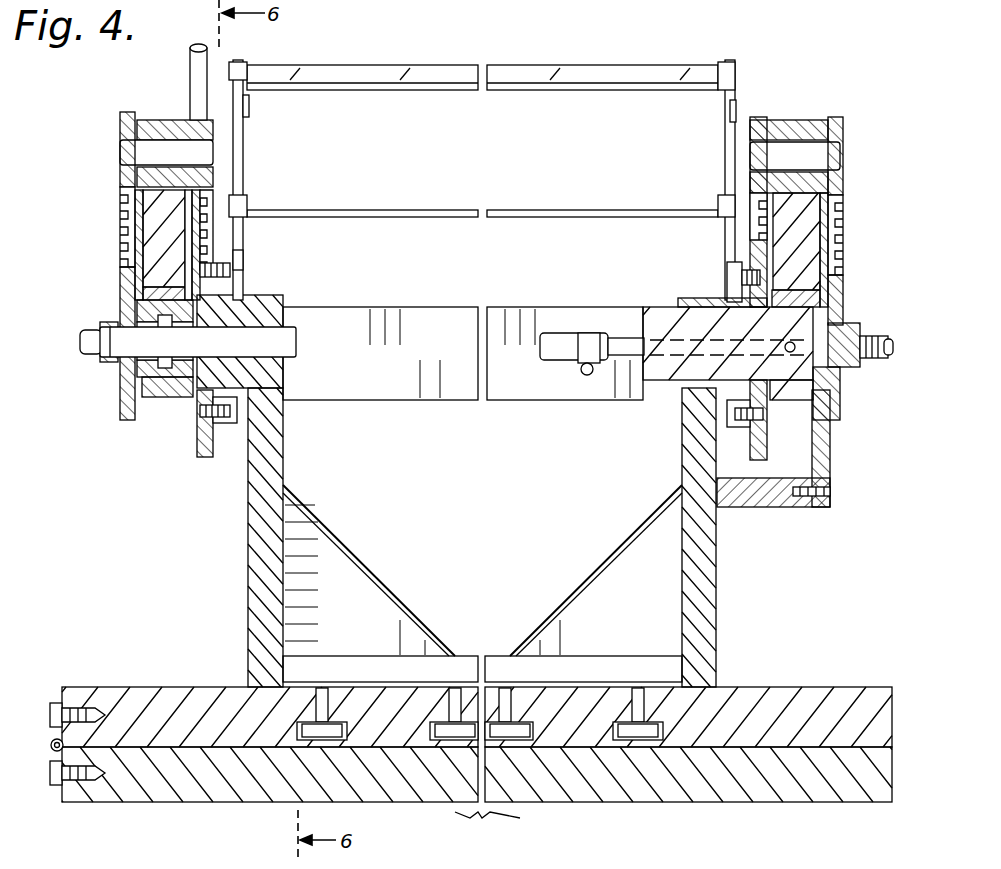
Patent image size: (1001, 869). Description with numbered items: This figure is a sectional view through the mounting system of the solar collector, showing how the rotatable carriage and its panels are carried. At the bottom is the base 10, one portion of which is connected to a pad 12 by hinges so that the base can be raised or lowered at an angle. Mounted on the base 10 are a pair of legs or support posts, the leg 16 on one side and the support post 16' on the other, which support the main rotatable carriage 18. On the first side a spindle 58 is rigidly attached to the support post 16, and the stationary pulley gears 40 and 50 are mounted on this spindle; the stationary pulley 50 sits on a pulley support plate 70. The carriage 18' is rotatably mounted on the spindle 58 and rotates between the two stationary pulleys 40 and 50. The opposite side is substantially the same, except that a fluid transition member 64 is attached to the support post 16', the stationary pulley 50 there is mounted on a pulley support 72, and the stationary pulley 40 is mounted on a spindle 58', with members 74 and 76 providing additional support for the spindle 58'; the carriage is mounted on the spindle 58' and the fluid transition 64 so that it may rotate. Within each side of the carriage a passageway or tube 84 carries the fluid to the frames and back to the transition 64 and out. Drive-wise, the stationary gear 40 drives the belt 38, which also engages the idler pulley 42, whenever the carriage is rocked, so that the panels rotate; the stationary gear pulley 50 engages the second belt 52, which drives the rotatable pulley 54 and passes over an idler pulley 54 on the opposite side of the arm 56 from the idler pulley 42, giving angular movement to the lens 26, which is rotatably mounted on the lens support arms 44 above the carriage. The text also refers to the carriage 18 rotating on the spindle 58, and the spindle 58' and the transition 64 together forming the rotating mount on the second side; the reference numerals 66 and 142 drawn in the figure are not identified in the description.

The base 10 is at (790, 690).
The pad 12 is at (818, 796).
The leg 16 is at (233, 537).
The support post 16' is at (730, 537).
The main rotatable carriage 18 is at (842, 409).
The carriage 18' is at (159, 414).
The lens 26 is at (582, 72).
The belt 38 is at (845, 252).
The stationary gear 40 is at (119, 393).
The idler pulley 42 is at (119, 118).
The lens support arm 44 is at (240, 142).
The stationary gear pulley 50 is at (200, 447).
The second belt 52 is at (752, 210).
The rotatable pulley 54 is at (203, 120).
The arm 56 is at (155, 215).
The spindle 58 is at (163, 338).
The spindle 58' is at (886, 333).
The fluid transition member 64 is at (806, 372).
The cylinder coupling 66 is at (574, 332).
The pulley support plate 70 is at (238, 298).
The pulley support 72 is at (684, 300).
The support member 74 is at (765, 506).
The support member 76 is at (830, 470).
The passageway 84 is at (165, 320).
The tube 142 is at (196, 44).